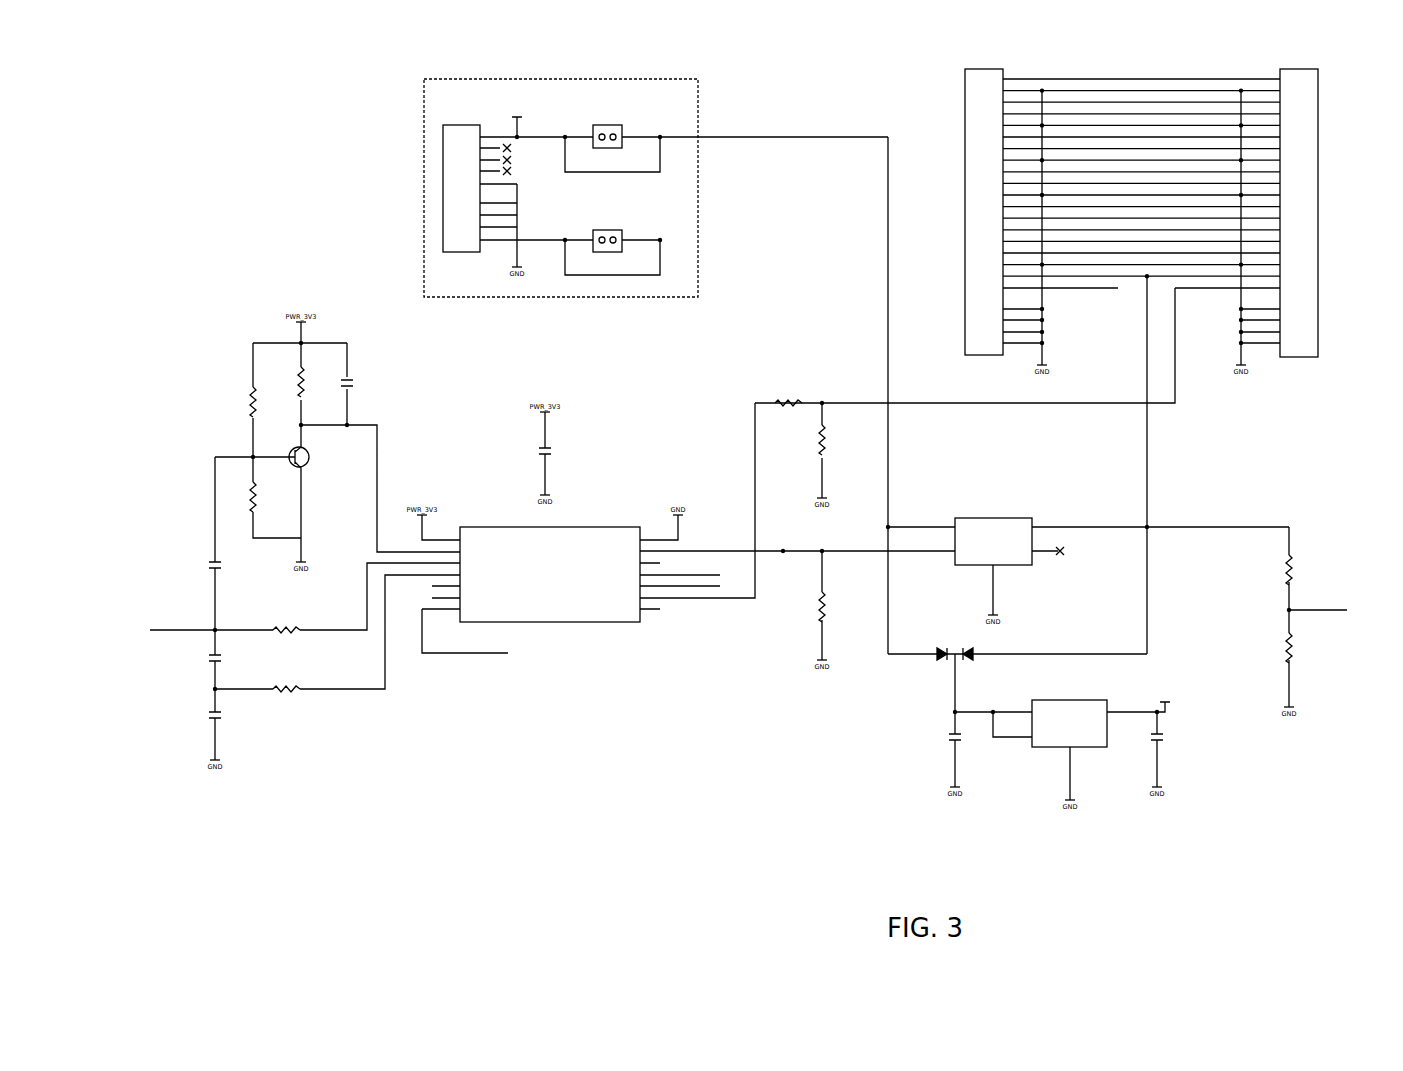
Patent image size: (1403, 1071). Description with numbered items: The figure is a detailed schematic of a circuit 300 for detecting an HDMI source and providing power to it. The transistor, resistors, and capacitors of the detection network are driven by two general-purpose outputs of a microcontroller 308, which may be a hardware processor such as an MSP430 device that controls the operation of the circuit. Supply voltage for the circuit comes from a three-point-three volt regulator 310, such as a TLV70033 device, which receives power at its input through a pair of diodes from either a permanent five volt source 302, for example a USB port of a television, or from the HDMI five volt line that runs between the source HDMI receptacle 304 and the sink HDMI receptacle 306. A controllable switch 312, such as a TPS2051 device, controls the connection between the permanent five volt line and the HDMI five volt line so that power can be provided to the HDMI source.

The circuit 300 is at (268, 109).
The permanent 5V source 302 is at (668, 76).
The source HDMI receptacle 304 is at (993, 53).
The sink HDMI receptacle 306 is at (1340, 38).
The microcontroller 308 is at (603, 523).
The 3.3V regulator 310 is at (1023, 516).
The voltage regulator U1 (TLV70033) 312 is at (1097, 746).